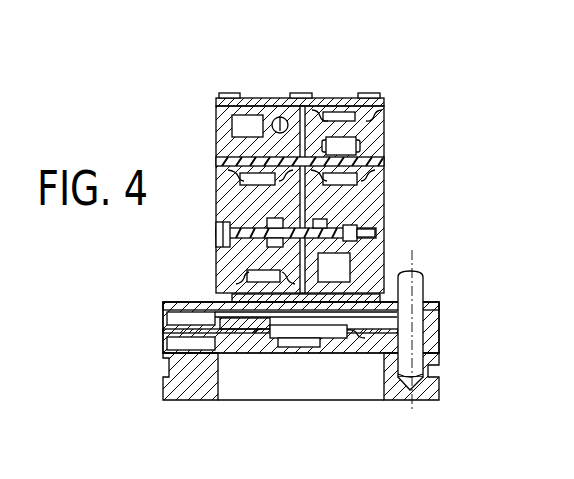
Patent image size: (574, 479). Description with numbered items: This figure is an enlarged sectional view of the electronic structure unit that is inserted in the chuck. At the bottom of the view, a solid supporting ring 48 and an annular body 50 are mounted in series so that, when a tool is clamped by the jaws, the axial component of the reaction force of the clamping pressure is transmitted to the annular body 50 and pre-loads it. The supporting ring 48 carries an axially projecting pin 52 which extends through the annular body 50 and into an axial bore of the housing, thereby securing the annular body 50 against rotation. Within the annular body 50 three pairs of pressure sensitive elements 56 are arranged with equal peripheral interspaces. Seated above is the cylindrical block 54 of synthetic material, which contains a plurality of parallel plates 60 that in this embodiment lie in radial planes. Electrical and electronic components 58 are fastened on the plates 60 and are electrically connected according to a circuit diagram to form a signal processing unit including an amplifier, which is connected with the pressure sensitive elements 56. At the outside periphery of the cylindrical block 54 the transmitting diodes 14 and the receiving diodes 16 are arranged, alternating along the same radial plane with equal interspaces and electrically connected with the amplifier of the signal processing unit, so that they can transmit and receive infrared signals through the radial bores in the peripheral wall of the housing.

The transmitting diodes 14 is at (298, 235).
The receiving diodes 16 is at (216, 234).
The solid supporting ring 48 is at (191, 392).
The annular body 50 is at (304, 338).
The axially projecting pin 52 is at (419, 285).
The cylindrical block 54 is at (305, 169).
The pressure sensitive elements 56 is at (177, 320).
The electrical and electronic components 58 is at (247, 128).
The parallel plates 60 is at (339, 102).